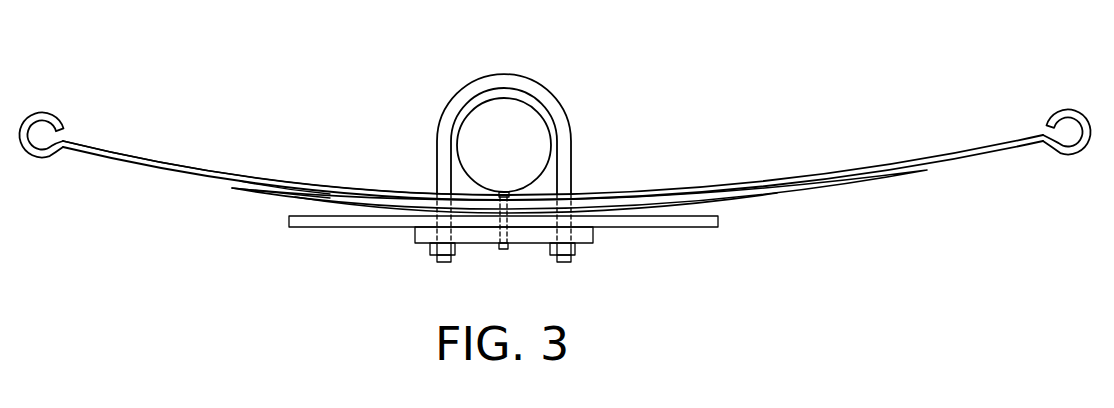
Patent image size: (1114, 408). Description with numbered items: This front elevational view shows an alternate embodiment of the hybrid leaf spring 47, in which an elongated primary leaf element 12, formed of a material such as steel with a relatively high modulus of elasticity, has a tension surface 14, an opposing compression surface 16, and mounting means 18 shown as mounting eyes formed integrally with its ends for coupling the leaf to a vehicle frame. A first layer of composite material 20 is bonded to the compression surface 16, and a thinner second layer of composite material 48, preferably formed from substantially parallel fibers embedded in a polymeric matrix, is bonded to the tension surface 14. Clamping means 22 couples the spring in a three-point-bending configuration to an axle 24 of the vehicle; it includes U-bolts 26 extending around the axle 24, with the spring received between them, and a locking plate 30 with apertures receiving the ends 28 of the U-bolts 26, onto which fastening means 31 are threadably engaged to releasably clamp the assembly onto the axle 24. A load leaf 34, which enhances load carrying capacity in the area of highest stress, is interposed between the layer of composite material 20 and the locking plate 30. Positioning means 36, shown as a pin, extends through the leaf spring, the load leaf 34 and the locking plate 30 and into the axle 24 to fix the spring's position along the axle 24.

The elongated primary leaf element 12 is at (142, 160).
The tension surface 14 is at (768, 183).
The compression surface 16 is at (767, 196).
The mounting means 18 is at (56, 114).
The layer of composite material 20 is at (232, 189).
The clamping means 22 is at (485, 58).
The axle 24 is at (521, 127).
The U-bolts 26 is at (435, 148).
The ends of the U-bolts 28 is at (440, 263).
The locking plate 30 is at (596, 238).
The nuts 31 is at (427, 249).
The load leaf 34 is at (307, 229).
The positioning means 36 is at (501, 250).
The hybrid leaf spring 47 is at (368, 164).
The second layer of composite material 48 is at (275, 185).